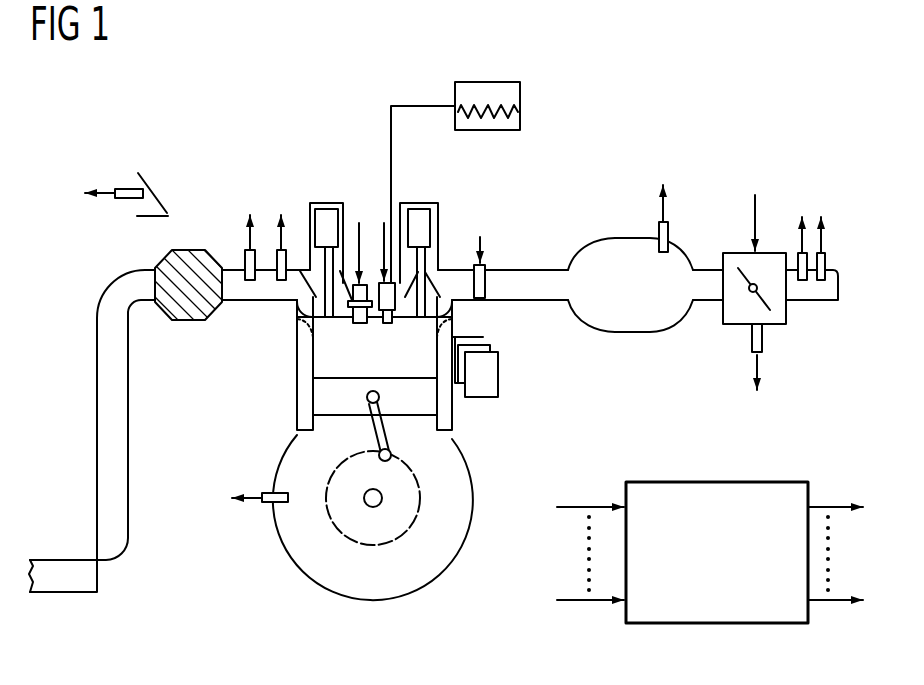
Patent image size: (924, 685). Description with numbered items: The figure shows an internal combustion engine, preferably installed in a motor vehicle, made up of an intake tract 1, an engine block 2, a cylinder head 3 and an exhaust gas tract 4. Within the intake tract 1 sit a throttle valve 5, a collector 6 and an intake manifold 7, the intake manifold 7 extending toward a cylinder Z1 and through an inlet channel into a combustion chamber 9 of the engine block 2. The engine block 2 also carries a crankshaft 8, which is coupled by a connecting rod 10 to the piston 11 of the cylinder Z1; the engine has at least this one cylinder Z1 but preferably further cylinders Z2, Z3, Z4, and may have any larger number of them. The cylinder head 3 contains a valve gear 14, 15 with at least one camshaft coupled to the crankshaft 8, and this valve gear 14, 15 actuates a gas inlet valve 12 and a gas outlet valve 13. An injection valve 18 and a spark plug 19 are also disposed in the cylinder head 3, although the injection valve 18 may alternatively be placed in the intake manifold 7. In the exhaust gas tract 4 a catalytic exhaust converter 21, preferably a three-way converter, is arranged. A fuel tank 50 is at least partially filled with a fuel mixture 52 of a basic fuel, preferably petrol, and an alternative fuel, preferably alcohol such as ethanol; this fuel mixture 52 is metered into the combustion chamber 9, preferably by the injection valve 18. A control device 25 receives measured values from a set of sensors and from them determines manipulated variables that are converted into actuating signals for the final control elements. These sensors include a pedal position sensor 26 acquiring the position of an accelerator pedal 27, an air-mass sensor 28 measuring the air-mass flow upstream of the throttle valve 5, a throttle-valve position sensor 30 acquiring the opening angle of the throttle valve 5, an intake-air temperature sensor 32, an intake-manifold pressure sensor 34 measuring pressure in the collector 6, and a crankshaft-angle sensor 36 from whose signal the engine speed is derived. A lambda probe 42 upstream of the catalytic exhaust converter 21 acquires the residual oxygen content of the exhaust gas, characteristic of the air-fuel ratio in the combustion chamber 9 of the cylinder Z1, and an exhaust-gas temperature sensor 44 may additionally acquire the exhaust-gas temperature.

The intake tract 1 is at (664, 350).
The engine block 2 is at (265, 358).
The cylinder head 3 is at (458, 213).
The exhaust gas tract 4 is at (88, 305).
The throttle valve 5 is at (733, 260).
The collector 6 is at (673, 317).
The intake manifold 7 is at (530, 278).
The crankshaft 8 is at (382, 500).
The combustion chamber 9 is at (313, 367).
The connecting rod 10 is at (377, 443).
The piston 11 is at (405, 405).
The gas inlet valve 12 is at (421, 323).
The gas outlet valve 13 is at (297, 333).
The valve gear 14 is at (428, 210).
The valve gear 15 is at (322, 215).
The injection valve 18 is at (387, 323).
The spark plug 19 is at (359, 323).
The catalytic exhaust converter 21 is at (190, 312).
The control device 25 is at (752, 482).
The pedal position sensor 26 is at (127, 189).
The accelerator pedal 27 is at (163, 187).
The air-mass sensor 28 is at (798, 258).
The throttle-valve position sensor 30 is at (762, 333).
The intake-air temperature sensor 32 is at (826, 262).
The intake-manifold pressure sensor 34 is at (658, 235).
The crankshaft-angle sensor 36 is at (268, 503).
The lambda probe 42 is at (245, 255).
The exhaust-gas temperature sensor 44 is at (277, 250).
The fuel tank 50 is at (487, 82).
The fuel mixture 52 is at (505, 125).
The cylinder Z1 is at (443, 397).
The cylinder Z2 is at (490, 375).
The cylinder Z3 is at (490, 350).
The cylinder Z4 is at (482, 340).